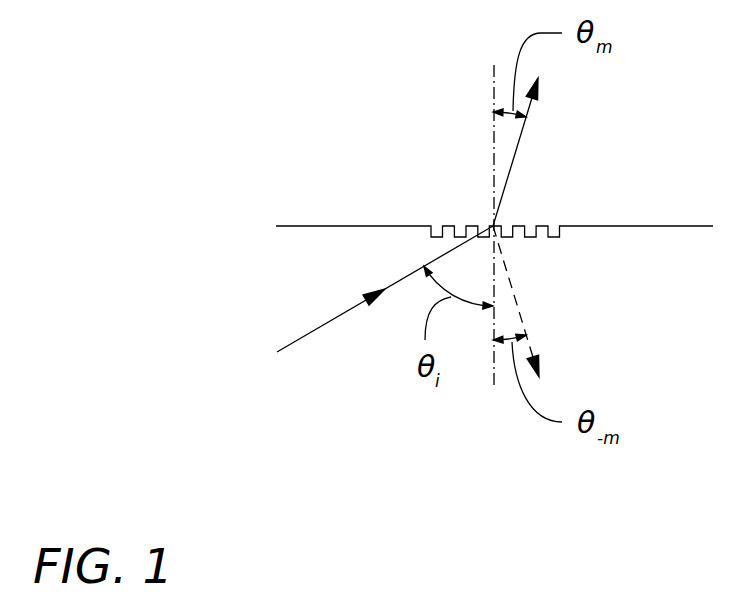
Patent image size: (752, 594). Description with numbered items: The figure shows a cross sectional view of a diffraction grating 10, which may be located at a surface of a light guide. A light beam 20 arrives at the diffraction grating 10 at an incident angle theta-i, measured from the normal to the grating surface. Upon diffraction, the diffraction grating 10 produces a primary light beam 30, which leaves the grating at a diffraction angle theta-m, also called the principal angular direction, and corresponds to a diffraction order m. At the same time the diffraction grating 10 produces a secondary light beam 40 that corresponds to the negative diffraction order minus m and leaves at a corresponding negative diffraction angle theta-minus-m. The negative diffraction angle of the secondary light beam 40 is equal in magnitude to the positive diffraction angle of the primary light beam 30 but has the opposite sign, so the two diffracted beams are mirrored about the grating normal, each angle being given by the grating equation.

The diffraction grating 10 is at (471, 213).
The light beam 20 is at (335, 320).
The primary light beam 30 is at (517, 152).
The secondary light beam 40 is at (517, 302).